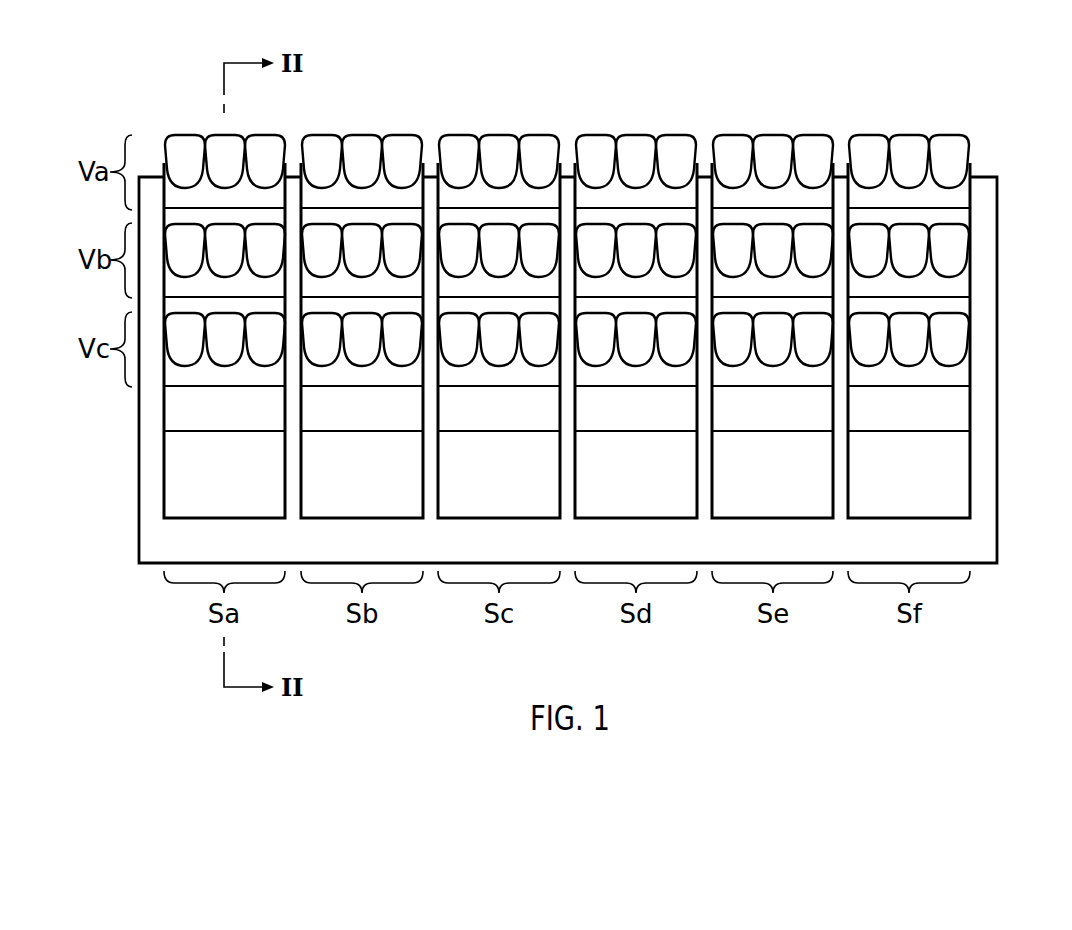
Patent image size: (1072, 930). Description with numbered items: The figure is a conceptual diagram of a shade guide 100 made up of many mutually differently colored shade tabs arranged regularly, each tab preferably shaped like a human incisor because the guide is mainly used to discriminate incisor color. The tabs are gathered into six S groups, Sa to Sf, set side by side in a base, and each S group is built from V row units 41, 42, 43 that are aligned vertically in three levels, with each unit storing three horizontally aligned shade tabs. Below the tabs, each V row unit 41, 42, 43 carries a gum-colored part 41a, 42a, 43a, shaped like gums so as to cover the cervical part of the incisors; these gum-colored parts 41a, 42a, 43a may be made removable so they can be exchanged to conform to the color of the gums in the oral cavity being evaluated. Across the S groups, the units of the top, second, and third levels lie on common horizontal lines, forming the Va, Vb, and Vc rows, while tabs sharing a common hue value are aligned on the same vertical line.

The shade guide 100 is at (566, 122).
The V row unit 41 is at (976, 217).
The gum-colored part 41a is at (957, 193).
The V row unit 42 is at (976, 303).
The gum-colored part 42a is at (957, 283).
The V row unit 43 is at (976, 392).
The gum-colored part 43a is at (957, 372).